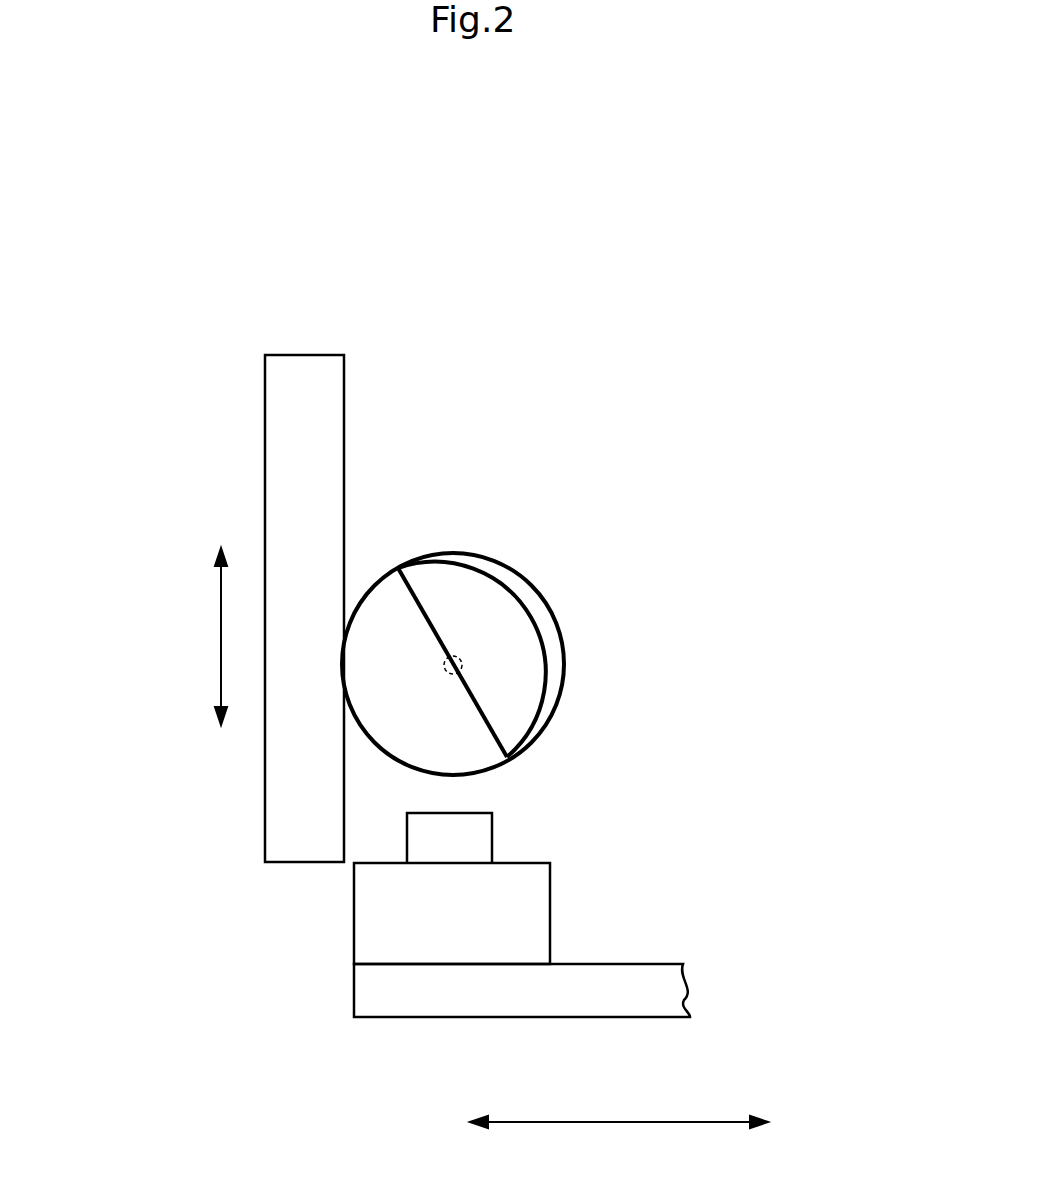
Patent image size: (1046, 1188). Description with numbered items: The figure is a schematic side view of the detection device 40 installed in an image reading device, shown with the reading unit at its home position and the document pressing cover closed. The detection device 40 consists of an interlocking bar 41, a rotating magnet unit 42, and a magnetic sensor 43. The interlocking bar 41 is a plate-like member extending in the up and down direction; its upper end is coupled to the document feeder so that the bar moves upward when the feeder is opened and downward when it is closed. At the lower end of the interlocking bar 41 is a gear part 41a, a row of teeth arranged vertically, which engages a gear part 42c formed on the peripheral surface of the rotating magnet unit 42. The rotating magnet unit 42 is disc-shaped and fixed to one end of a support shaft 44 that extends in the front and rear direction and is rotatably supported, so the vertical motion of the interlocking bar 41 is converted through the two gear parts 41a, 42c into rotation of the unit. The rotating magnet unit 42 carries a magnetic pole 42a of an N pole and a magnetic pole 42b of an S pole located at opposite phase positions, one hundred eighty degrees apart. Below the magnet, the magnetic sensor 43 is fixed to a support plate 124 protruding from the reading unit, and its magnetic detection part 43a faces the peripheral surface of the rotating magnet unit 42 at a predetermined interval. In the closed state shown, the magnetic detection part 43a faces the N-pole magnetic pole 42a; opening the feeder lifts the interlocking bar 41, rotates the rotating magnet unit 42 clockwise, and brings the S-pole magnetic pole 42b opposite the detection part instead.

The detection device 40 is at (240, 243).
The interlocking bar 41 is at (265, 460).
The gear part 41a is at (344, 717).
The rotating magnet unit 42 is at (547, 590).
The magnetic pole of an N pole 42a is at (417, 653).
The magnetic pole of a S pole 42b is at (513, 588).
The gear part 42c is at (343, 663).
The magnetic sensor 43 is at (568, 880).
The magnetic detection part 43a is at (495, 836).
The support shaft 44 is at (463, 668).
The support plate 124 is at (643, 982).